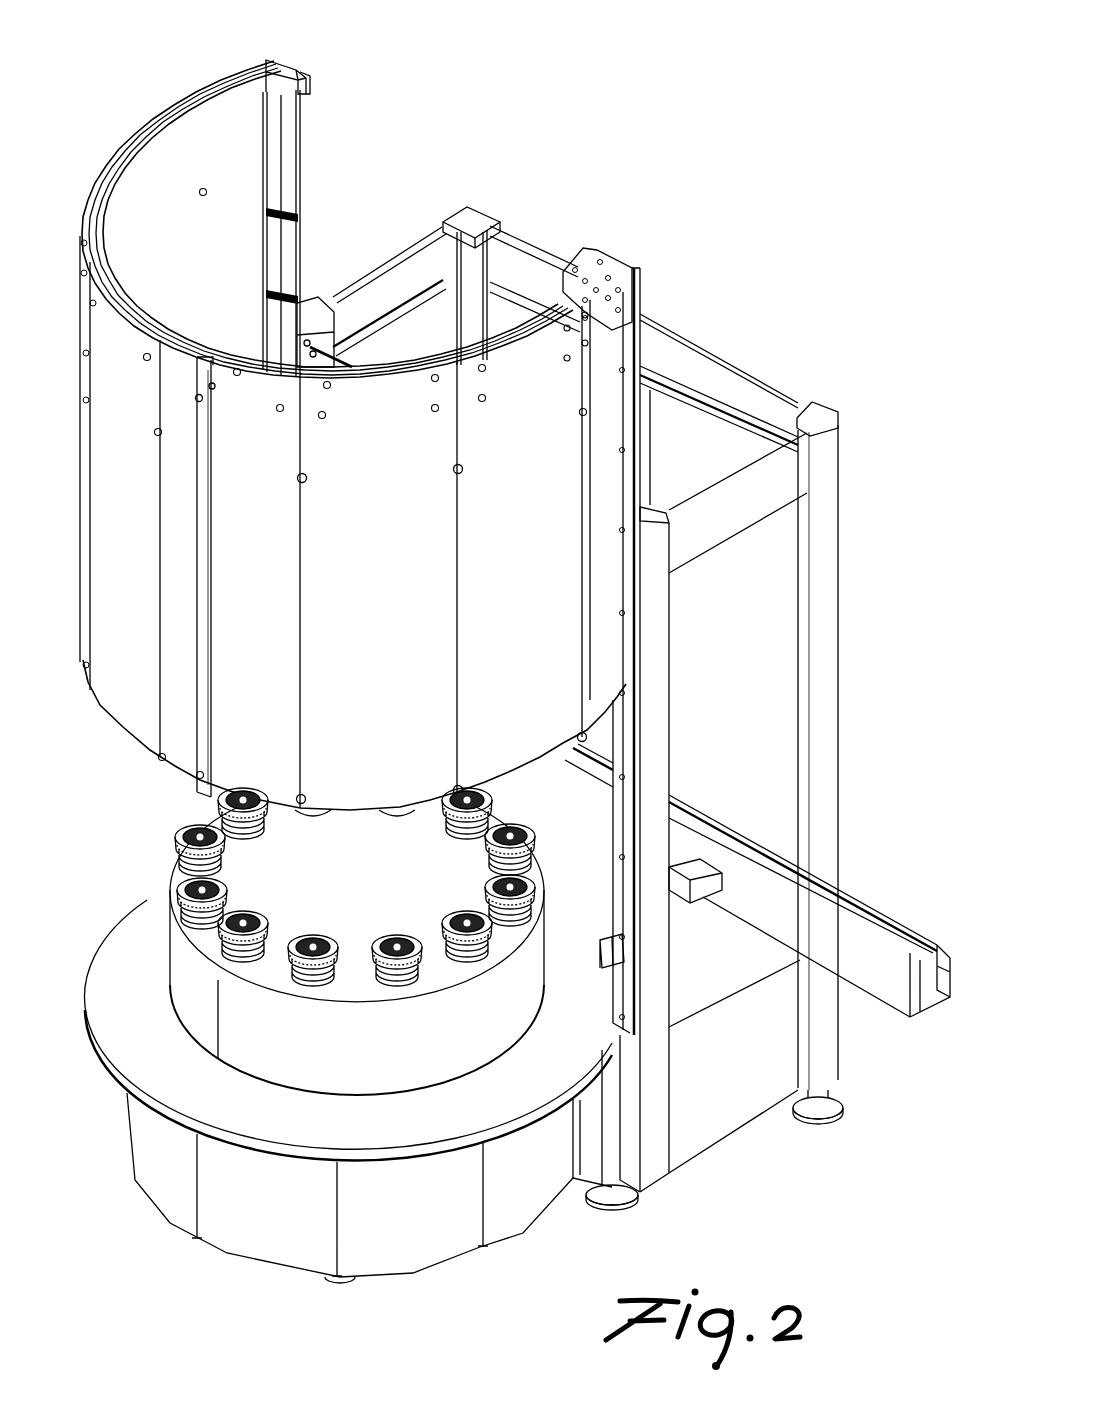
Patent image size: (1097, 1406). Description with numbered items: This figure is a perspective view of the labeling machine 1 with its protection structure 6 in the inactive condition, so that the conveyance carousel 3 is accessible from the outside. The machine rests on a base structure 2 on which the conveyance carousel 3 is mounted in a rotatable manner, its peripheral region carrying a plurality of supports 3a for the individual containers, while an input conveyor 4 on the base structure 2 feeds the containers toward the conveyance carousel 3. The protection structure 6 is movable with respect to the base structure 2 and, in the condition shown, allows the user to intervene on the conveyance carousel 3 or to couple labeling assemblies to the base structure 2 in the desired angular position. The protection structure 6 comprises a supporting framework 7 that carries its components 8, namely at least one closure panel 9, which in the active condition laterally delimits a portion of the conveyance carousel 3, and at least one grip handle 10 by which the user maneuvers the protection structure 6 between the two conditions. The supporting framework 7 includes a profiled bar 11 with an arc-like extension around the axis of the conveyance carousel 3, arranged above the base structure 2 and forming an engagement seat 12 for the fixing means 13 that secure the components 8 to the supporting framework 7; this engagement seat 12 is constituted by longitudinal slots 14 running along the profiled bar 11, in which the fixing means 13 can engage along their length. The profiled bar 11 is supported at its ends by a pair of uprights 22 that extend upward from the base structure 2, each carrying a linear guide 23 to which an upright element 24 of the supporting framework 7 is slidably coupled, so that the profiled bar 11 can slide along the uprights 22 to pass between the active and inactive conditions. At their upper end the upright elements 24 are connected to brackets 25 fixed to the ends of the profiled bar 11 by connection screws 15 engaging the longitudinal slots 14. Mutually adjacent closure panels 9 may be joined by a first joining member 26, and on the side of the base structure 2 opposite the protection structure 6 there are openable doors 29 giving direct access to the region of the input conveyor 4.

The labeling machine 1 is at (802, 279).
The base structure 2 is at (742, 1100).
The conveyance carousel 3 is at (482, 1030).
The supports 3a is at (177, 878).
The input conveyor 4 is at (797, 879).
The protection structure 6 is at (77, 400).
The supporting framework 7 is at (312, 91).
The components 8 is at (546, 355).
The closure panel 9 is at (137, 220).
The grip handle 10 is at (196, 584).
The profiled bar 11 is at (140, 128).
The engagement seat 12 is at (254, 96).
The fixing means 13 is at (147, 353).
The longitudinal slots 14 is at (170, 130).
The connection screws 15 is at (195, 398).
The uprights 22 is at (323, 305).
The linear guide 23 is at (628, 842).
The upright element 24 is at (290, 187).
The brackets 25 is at (303, 68).
The first joining member 26 is at (299, 481).
The openable doors 29 is at (707, 447).